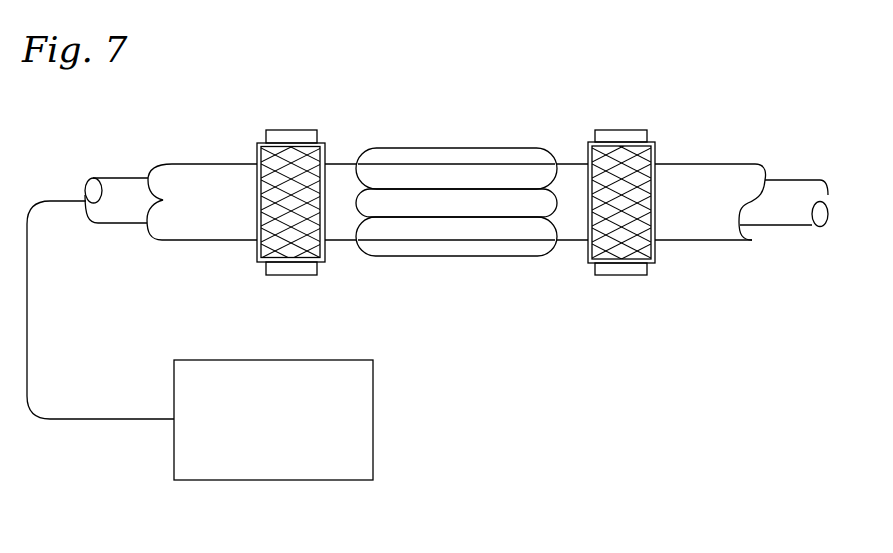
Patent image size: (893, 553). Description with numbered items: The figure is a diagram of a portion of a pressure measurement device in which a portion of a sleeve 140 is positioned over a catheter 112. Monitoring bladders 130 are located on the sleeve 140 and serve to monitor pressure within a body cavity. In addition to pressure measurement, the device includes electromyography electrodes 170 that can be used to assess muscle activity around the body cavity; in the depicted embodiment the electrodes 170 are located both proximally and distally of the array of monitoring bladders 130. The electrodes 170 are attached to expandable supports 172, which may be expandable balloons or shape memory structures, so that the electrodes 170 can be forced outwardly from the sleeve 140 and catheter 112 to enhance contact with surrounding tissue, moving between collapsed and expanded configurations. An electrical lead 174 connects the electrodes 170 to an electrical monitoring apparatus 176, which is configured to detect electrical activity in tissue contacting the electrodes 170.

The catheter 112 is at (792, 226).
The monitoring bladders 130 is at (422, 148).
The sleeve 140 is at (572, 242).
The electromyography (EMG) electrodes 170 is at (280, 130).
The expandable supports 172 is at (260, 220).
The electrical lead 174 is at (125, 420).
The electrical monitoring apparatus 176 is at (373, 440).